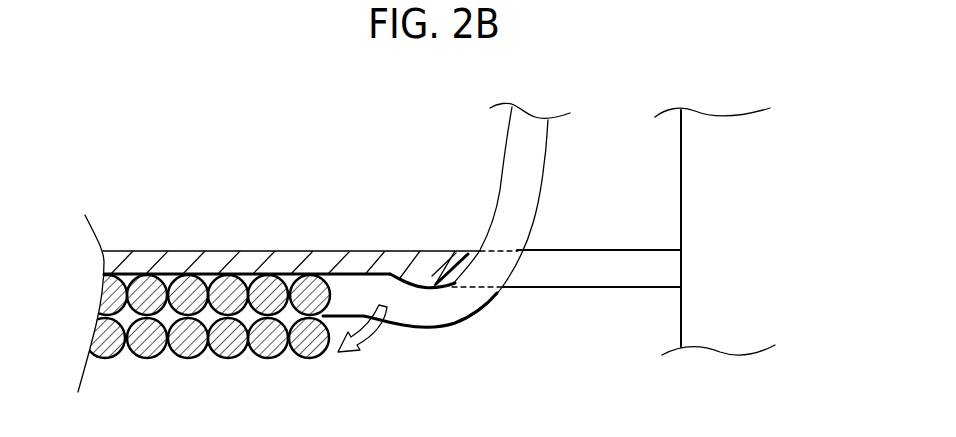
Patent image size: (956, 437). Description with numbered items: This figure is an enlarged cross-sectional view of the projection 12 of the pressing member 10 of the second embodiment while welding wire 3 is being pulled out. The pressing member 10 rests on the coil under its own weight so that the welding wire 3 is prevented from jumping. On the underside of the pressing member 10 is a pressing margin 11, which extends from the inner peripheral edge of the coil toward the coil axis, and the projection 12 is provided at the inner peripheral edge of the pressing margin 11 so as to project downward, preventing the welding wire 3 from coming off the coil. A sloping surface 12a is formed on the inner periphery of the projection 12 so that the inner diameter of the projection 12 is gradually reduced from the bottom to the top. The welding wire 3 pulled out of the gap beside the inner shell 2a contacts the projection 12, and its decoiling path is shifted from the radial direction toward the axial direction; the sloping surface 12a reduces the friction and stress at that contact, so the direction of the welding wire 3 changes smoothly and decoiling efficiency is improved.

The pressing member 10 is at (262, 228).
The projection 12 is at (424, 274).
The pressing margin 11 is at (329, 255).
The welding wire 3 is at (518, 132).
The sloping surface 12a is at (455, 287).
The inner shell 2a is at (695, 120).